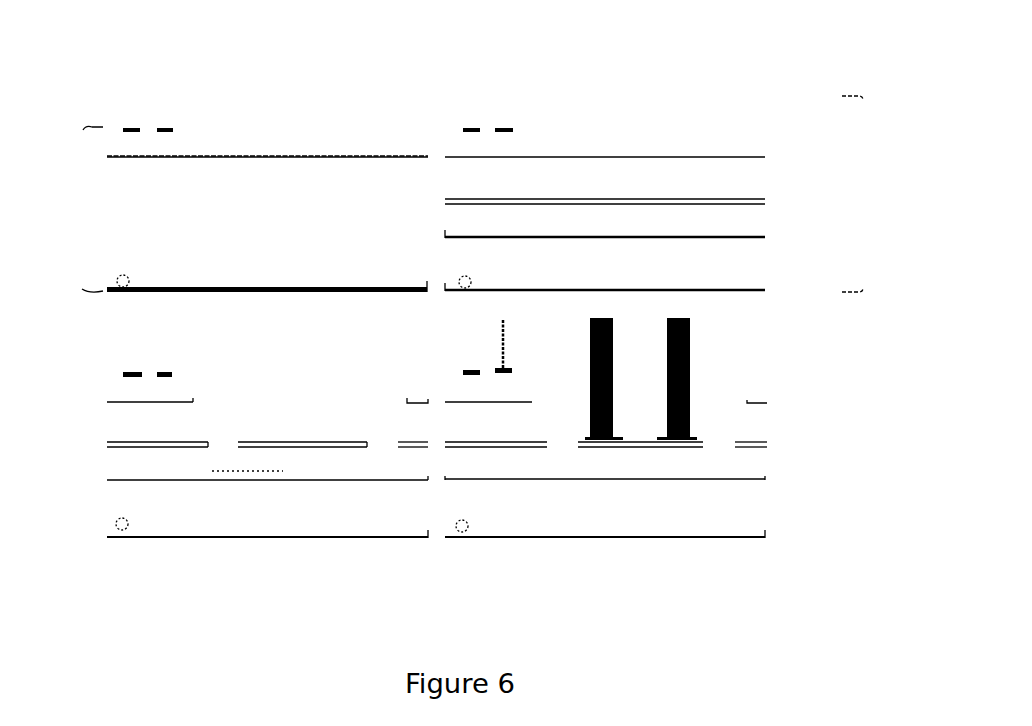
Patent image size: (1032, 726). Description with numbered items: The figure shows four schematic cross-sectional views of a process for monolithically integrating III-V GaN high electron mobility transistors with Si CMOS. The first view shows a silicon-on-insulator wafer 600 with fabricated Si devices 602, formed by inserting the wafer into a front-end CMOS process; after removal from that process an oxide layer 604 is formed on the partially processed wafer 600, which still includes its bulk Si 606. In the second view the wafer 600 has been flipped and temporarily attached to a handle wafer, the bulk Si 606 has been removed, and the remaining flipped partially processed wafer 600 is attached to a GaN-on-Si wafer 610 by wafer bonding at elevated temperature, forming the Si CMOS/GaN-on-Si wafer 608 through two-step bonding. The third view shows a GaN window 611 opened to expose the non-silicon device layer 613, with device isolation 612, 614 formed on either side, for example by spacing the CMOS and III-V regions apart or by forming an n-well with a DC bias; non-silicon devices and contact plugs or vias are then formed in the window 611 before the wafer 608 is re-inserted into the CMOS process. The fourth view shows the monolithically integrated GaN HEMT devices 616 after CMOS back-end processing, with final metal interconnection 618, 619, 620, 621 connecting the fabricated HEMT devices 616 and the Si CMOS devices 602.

The silicon-on-insulator wafer 600 is at (86, 214).
The Si devices 602 is at (143, 108).
The oxide layer 604 is at (103, 112).
The bulk Si 606 is at (103, 224).
The Si CMOS/GaN-on-Si wafer 608 is at (863, 191).
The GaN-on-Si wafer 610 is at (768, 192).
The GaN window 611 is at (326, 382).
The device isolation 612 is at (220, 447).
The non-silicon device layer 613 is at (107, 457).
The device isolation 614 is at (380, 447).
The GaN HEMT devices 616 is at (650, 455).
The final metal interconnection 618 is at (690, 373).
The final metal interconnection 619 is at (590, 375).
The final metal interconnection 620 is at (502, 355).
The final metal interconnection 621 is at (580, 317).